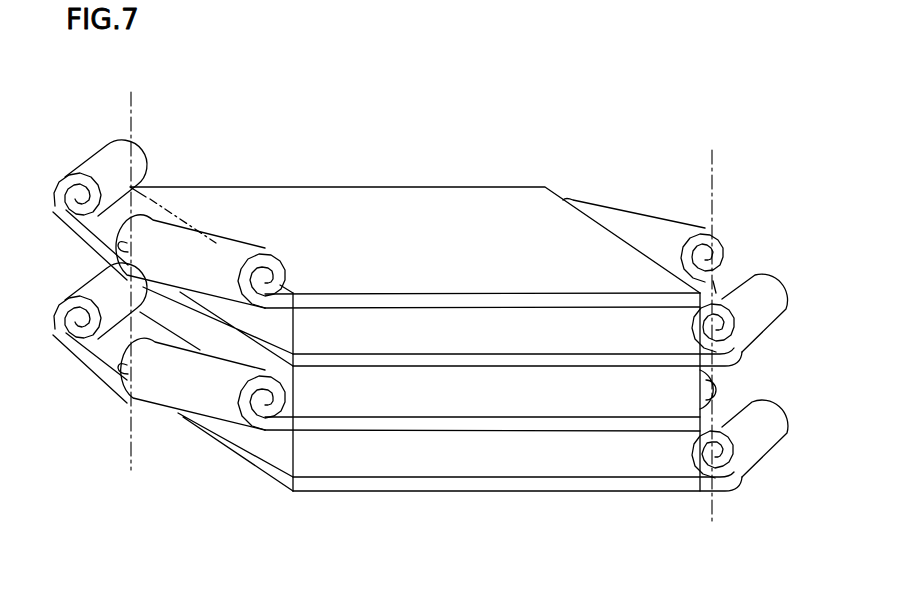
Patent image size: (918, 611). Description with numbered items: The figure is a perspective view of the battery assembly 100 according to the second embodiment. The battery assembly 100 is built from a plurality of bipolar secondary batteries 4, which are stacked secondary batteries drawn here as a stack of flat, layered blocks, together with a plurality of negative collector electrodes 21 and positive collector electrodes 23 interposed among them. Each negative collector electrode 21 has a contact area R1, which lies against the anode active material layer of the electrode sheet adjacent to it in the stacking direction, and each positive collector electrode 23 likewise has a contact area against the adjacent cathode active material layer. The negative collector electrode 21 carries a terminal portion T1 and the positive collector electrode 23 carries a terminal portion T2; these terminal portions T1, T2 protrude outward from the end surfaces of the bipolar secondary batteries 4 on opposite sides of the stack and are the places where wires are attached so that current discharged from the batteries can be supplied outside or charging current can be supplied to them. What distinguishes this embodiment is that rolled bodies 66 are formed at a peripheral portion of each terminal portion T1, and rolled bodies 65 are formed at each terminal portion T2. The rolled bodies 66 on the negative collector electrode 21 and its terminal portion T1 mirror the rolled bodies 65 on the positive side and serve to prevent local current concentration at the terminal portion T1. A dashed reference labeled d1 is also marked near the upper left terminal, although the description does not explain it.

The battery assembly 100 is at (355, 106).
The bipolar secondary battery 4 is at (443, 332).
The negative collector electrode 21 is at (398, 302).
The positive collector electrode 23 is at (488, 365).
The rolled body 66 is at (98, 165).
The rolled body 65 is at (640, 225).
The terminal portion T1 is at (92, 243).
The terminal portion T2 is at (707, 293).
The contact area R1 is at (300, 220).
The distance d1 is at (158, 197).